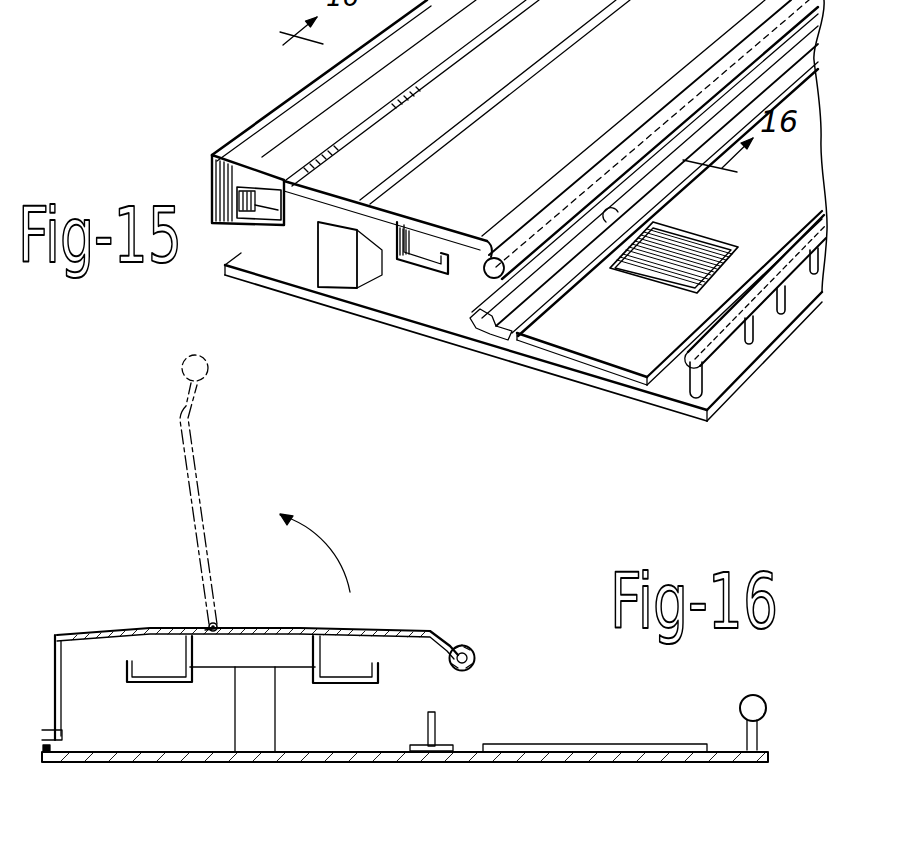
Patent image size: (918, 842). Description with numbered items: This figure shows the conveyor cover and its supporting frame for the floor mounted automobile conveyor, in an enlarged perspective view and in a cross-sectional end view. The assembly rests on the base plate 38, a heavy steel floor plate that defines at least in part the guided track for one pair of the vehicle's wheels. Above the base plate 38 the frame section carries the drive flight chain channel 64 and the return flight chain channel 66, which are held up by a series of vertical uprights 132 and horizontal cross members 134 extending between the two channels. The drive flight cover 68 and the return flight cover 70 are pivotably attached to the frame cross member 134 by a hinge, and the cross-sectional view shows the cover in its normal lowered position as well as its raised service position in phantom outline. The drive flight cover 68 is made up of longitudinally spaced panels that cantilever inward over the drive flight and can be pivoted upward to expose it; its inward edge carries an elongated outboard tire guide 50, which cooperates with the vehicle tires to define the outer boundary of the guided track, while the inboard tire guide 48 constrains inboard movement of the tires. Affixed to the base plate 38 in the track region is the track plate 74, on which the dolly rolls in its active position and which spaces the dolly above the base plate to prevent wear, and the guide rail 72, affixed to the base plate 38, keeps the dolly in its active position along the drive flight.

In FIG. 15, the return flight cover 70 is at (263, 140).
In FIG. 16, the return flight cover 70 is at (85, 635).
In FIG. 15, the horizontal cross member 134 is at (313, 204).
In FIG. 15, the return flight chain channel 66 is at (232, 226).
In FIG. 16, the return flight chain channel 66 is at (140, 683).
In FIG. 15, the vertical upright 132 is at (338, 255).
In FIG. 15, the base plate 38 is at (400, 293).
In FIG. 16, the base plate 38 is at (393, 764).
In FIG. 15, the drive flight chain channel 64 is at (425, 278).
In FIG. 16, the drive flight chain channel 64 is at (342, 684).
In FIG. 15, the track plate 74 is at (632, 329).
In FIG. 16, the track plate 74 is at (560, 742).
In FIG. 15, the inboard tire guide 48 is at (702, 352).
In FIG. 16, the inboard tire guide 48 is at (752, 700).
In FIG. 16, the drive flight cover 68 is at (218, 622).
In FIG. 16, the outboard tire guide 50 is at (477, 662).
In FIG. 16, the guide rail 72 is at (437, 733).